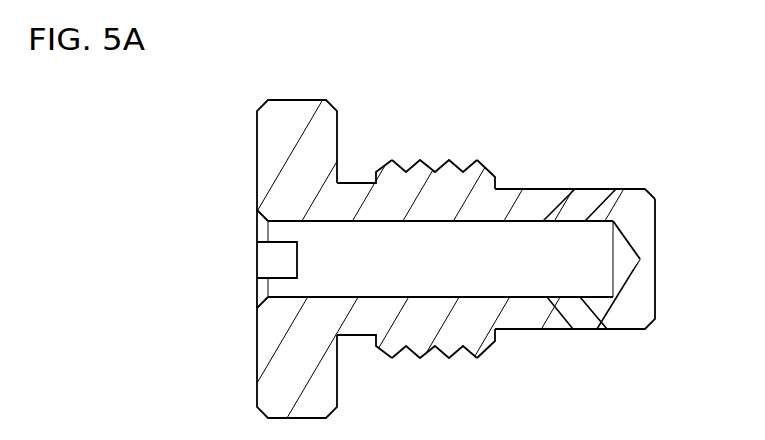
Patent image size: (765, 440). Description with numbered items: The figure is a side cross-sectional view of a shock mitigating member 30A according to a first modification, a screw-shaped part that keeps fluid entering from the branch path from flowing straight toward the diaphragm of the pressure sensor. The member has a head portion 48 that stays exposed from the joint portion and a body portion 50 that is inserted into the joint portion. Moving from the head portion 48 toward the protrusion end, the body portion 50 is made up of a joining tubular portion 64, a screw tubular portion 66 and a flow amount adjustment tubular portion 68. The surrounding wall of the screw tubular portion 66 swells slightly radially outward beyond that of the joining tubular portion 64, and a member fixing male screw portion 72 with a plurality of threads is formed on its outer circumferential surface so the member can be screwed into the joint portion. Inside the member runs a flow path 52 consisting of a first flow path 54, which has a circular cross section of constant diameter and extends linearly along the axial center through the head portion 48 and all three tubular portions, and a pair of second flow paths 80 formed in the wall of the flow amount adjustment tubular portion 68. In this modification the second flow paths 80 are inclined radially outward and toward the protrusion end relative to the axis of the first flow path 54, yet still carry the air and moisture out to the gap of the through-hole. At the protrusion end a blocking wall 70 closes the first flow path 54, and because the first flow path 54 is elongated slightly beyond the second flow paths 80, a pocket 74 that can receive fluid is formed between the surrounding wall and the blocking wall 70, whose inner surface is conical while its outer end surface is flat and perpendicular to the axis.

The shock mitigating member 30A is at (233, 116).
The head portion 48 is at (292, 99).
The body portion 50 is at (488, 96).
The flow path 52 is at (398, 238).
The first flow path 54 is at (320, 240).
The joining tubular portion 64 is at (358, 183).
The screw tubular portion 66 is at (441, 170).
The flow amount adjustment tubular portion 68 is at (518, 188).
The blocking wall 70 is at (636, 298).
The member fixing male screw portion 72 is at (438, 350).
The pocket 74 is at (595, 247).
The second flow paths 80 is at (577, 312).